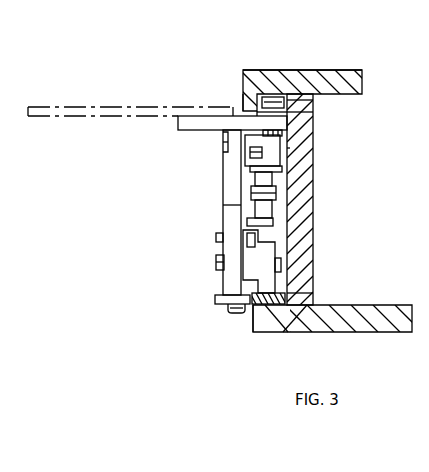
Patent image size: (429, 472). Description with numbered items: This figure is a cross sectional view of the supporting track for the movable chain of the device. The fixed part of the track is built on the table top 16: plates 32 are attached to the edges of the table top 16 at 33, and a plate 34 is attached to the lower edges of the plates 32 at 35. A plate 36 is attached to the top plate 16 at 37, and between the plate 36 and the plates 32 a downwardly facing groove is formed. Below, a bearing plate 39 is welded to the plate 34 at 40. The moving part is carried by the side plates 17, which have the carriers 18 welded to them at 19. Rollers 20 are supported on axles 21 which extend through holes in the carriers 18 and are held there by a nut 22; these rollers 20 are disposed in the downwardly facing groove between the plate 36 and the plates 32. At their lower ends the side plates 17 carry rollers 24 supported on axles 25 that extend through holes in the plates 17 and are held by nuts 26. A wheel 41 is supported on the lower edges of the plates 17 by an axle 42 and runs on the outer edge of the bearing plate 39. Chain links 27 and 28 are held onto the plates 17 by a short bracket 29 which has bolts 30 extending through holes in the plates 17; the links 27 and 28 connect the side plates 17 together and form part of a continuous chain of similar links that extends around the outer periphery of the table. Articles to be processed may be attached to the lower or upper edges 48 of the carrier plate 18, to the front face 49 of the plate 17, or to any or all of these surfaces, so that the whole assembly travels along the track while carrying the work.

The table top 16 is at (310, 69).
The side plates 17 is at (233, 197).
The carriers 18 is at (205, 129).
The weld 19 is at (216, 142).
The rollers 20 is at (313, 111).
The axles 21 is at (313, 99).
The nut 22 is at (313, 137).
The rollers 24 is at (281, 264).
The axles 25 is at (265, 278).
The nuts 26 is at (216, 265).
The chain link 27 is at (311, 203).
The chain link 28 is at (273, 183).
The short bracket 29 is at (287, 148).
The bolts 30 is at (216, 237).
The plates 32 is at (305, 293).
The attachment 33 is at (287, 93).
The plate 34 is at (347, 328).
The attachment 35 is at (301, 306).
The plate 36 is at (242, 70).
The attachment 37 is at (260, 71).
The bearing plate 39 is at (252, 306).
The weld 40 is at (266, 322).
The wheel 41 is at (215, 298).
The axle 42 is at (230, 309).
The edges 48 is at (215, 122).
The front face 49 is at (226, 208).